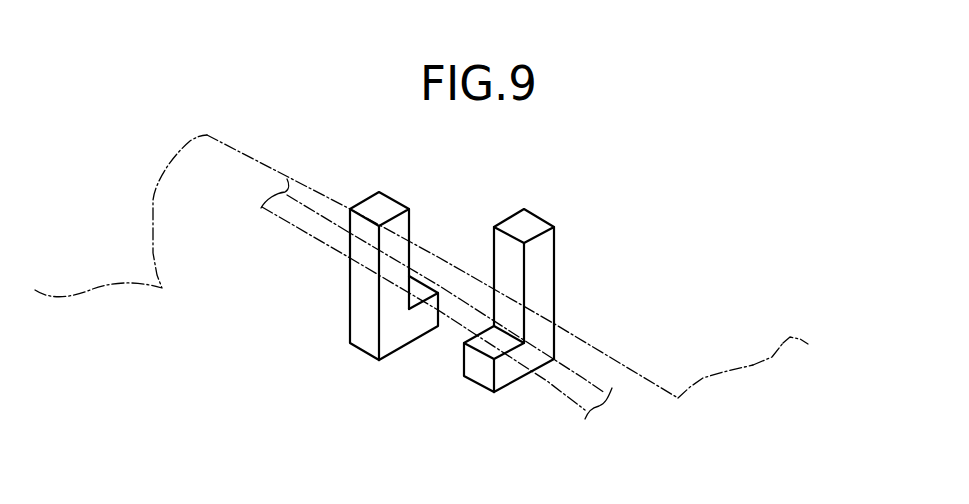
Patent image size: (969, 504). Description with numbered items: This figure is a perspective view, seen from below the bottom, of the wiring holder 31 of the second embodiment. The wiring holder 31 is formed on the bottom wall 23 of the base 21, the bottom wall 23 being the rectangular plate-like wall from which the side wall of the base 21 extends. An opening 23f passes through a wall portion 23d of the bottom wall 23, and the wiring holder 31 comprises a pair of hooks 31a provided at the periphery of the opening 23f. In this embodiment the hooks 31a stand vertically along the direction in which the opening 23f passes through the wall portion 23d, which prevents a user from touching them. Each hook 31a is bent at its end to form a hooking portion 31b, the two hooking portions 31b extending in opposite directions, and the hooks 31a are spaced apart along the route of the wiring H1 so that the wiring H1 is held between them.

The base 21 is at (690, 388).
The bottom wall 23 is at (771, 358).
The wall portion 23d is at (808, 344).
The opening 23f is at (153, 252).
The wiring holder 31 is at (451, 297).
The hooks 31a is at (350, 306).
The hooking portions 31b is at (410, 278).
The wiring H1 is at (547, 387).